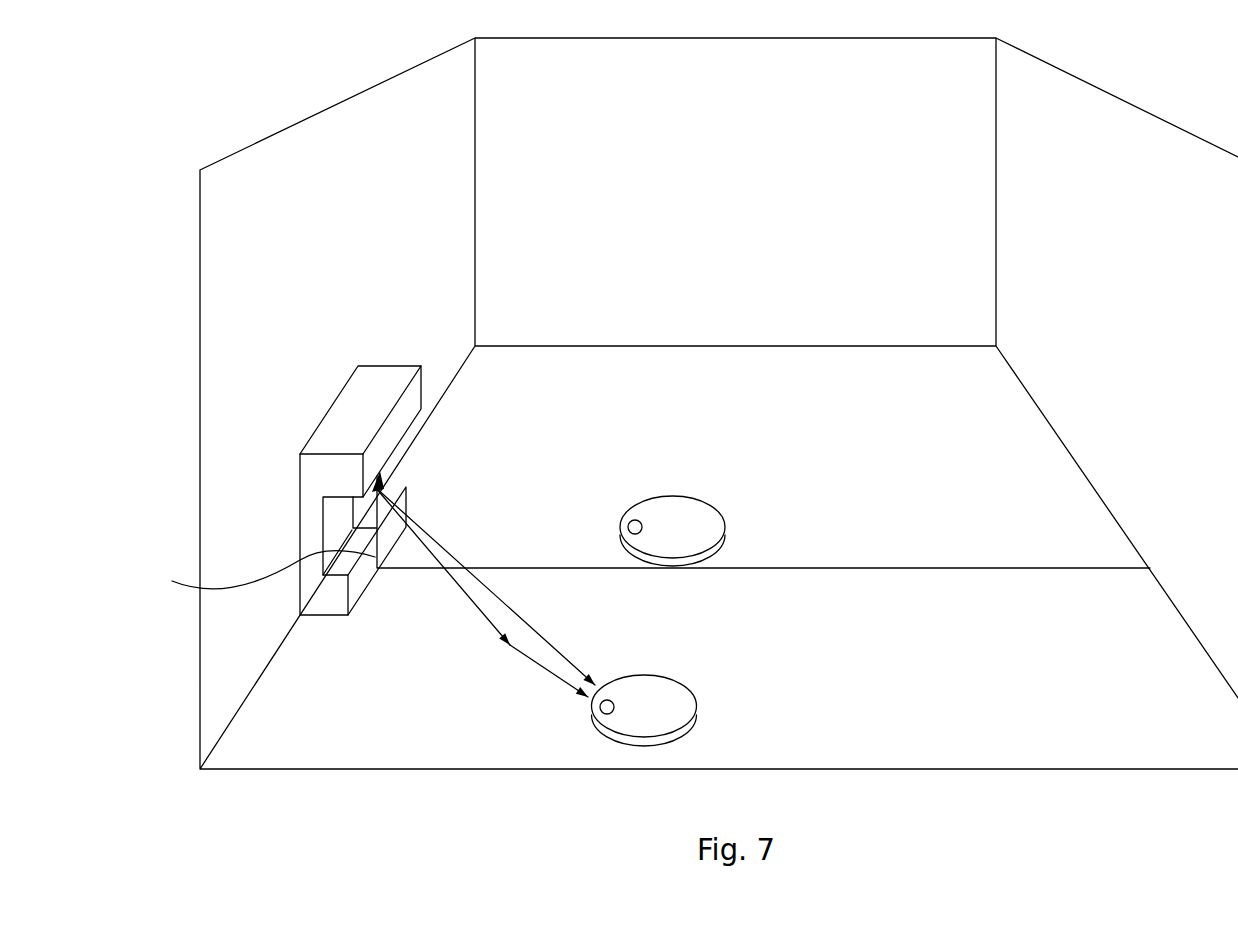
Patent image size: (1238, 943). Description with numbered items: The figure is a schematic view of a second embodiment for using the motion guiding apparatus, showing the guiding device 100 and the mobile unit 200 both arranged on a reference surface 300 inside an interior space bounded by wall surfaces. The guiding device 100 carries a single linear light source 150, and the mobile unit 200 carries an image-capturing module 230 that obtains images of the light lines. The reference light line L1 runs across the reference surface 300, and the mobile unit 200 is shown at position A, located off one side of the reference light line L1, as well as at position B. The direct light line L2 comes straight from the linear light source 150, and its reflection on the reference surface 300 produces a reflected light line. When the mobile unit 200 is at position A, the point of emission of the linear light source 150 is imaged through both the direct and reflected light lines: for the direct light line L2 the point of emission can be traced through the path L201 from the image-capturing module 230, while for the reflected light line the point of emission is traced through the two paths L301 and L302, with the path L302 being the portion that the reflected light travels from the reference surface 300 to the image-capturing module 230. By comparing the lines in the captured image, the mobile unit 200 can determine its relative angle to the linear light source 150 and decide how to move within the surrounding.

The guiding device 100 is at (305, 381).
The linear light source 150 is at (380, 483).
The mobile unit 200 is at (673, 702).
The image-capturing module 230 is at (602, 712).
The reference surface 300 is at (280, 727).
The reference light line L1 is at (932, 569).
The direct light line L2 is at (259, 572).
The path of direct light line L201 is at (538, 630).
The first path of reflected light line L301 is at (477, 607).
The second path of reflected light line L302 is at (542, 667).
The position A is at (648, 662).
The position B is at (675, 482).